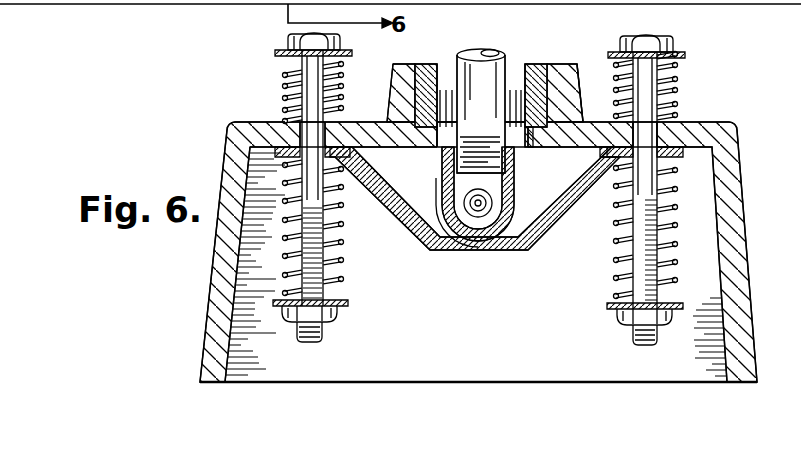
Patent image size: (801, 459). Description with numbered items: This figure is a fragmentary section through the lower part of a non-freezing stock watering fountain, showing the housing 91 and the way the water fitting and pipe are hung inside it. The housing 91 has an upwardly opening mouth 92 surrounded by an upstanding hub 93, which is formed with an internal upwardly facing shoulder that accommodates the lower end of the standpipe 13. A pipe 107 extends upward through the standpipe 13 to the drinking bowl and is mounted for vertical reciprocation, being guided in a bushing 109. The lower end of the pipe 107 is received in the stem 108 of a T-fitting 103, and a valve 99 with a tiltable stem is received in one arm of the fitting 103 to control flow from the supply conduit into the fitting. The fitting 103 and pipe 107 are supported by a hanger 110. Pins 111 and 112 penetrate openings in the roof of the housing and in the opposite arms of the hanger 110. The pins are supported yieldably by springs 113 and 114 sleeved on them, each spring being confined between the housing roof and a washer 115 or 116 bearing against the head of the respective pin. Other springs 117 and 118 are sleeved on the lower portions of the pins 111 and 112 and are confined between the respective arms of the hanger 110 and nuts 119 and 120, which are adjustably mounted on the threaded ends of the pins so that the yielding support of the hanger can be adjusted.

The standpipe 13 is at (540, 66).
The housing 91 is at (741, 234).
The upwardly opening mouth 92 is at (529, 142).
The upstanding hub 93 is at (583, 100).
The valve 99 is at (493, 203).
The T-fitting 103 is at (443, 207).
The pipe 107 is at (459, 62).
The stem of the fitting 108 is at (443, 165).
The bushing 109 is at (515, 66).
The hanger 110 is at (478, 250).
The pin 111 is at (638, 113).
The pin 112 is at (306, 93).
The spring 113 is at (679, 108).
The spring 114 is at (341, 74).
The washer 115 is at (679, 55).
The washer 116 is at (288, 45).
The spring 117 is at (669, 222).
The spring 118 is at (336, 262).
The nut 119 is at (620, 312).
The nut 120 is at (338, 316).